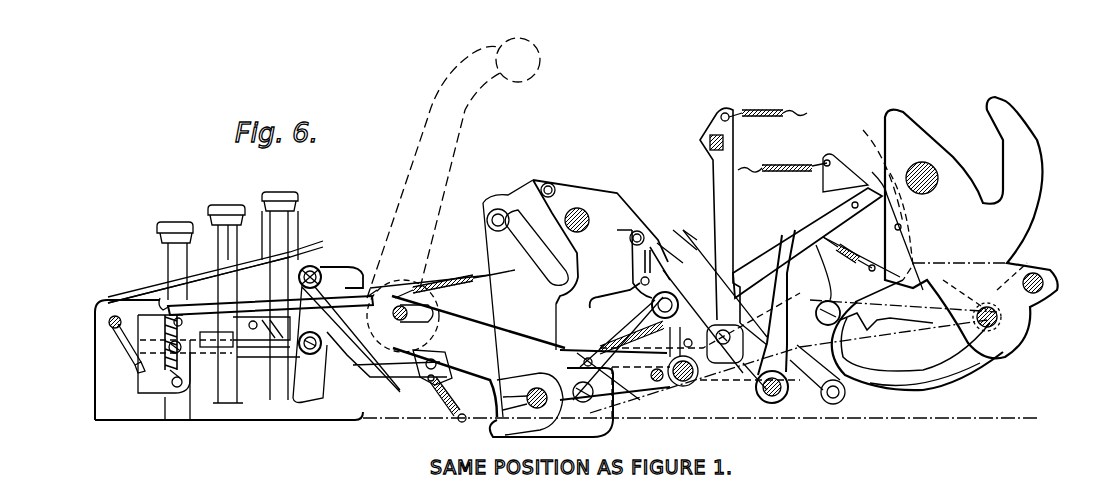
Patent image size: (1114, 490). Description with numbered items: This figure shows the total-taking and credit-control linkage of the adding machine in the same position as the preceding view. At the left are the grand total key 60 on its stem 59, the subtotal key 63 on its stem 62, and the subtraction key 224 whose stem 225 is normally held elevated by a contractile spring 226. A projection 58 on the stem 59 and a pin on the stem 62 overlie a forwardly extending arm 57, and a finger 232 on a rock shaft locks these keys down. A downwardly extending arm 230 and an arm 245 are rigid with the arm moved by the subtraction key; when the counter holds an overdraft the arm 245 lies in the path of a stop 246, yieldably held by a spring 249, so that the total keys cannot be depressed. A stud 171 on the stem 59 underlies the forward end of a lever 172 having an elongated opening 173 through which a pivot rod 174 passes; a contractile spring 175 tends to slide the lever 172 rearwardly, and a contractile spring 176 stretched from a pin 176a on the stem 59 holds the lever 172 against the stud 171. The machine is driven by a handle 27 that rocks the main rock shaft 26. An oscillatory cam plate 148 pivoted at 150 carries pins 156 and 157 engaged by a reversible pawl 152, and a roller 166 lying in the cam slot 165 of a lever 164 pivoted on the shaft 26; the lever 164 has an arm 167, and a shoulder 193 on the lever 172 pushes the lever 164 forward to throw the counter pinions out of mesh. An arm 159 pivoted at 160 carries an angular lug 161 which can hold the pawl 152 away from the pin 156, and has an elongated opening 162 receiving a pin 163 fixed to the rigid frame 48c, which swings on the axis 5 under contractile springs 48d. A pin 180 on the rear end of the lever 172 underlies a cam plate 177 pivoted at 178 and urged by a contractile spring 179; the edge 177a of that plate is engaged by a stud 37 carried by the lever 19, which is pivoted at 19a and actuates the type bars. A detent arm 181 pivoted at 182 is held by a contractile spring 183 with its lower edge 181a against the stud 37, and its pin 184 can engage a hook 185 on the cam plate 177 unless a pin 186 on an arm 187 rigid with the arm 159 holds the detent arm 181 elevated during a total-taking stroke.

The grand total key 60 is at (170, 222).
The subtotal key 63 is at (232, 204).
The subtraction key 224 is at (314, 180).
The stem 225 is at (285, 232).
The contractile spring 226 is at (300, 263).
The stem 62 is at (238, 240).
The stem 59 is at (170, 262).
The stud 171 is at (160, 307).
The finger 232 is at (123, 343).
The projection 58 is at (220, 340).
The arm 57 is at (252, 360).
The contractile spring 176 is at (170, 360).
The pin 176a is at (180, 392).
The arm 245 is at (352, 357).
The arm 230 is at (323, 398).
The stop 246 is at (413, 363).
The spring 249 is at (443, 413).
The main rock shaft 26 is at (490, 433).
The pivot rod 174 is at (373, 283).
The contractile spring 175 is at (433, 283).
The elongated opening 173 is at (437, 297).
The lever 172 is at (478, 356).
The cam slot 165 is at (517, 257).
The lever 164 is at (573, 310).
The shoulder 193 is at (656, 355).
The handle 27 is at (423, 152).
The roller 166 is at (497, 208).
The pin 157 is at (549, 183).
The pivot 150 is at (580, 208).
The cam plate 148 is at (628, 203).
The pin 156 is at (645, 232).
The arm 159 is at (687, 250).
The reversible pawl 152 is at (632, 257).
The angular lug 161 is at (672, 275).
The pin 163 is at (730, 330).
The arm 167 is at (657, 407).
The elongated opening 162 is at (710, 370).
The pivot 160 is at (772, 403).
The pin 180 is at (834, 405).
The cam plate 177 is at (917, 378).
The edge 177a is at (953, 370).
The axis 5 is at (710, 140).
The contractile springs 48d is at (762, 112).
The rigid frame 48c is at (725, 158).
The contractile spring 183 is at (795, 162).
The pin 186 is at (885, 201).
The arm 187 is at (797, 227).
The contractile spring 179 is at (860, 243).
The pivot 178 is at (828, 300).
The pin 184 is at (900, 225).
The hook 185 is at (913, 245).
The detent arm 181 is at (973, 263).
The lower edge 181a is at (1030, 258).
The pivot 182 is at (1043, 290).
The stud 37 is at (1000, 323).
The pivot 19a is at (927, 165).
The lever 19 is at (1033, 175).